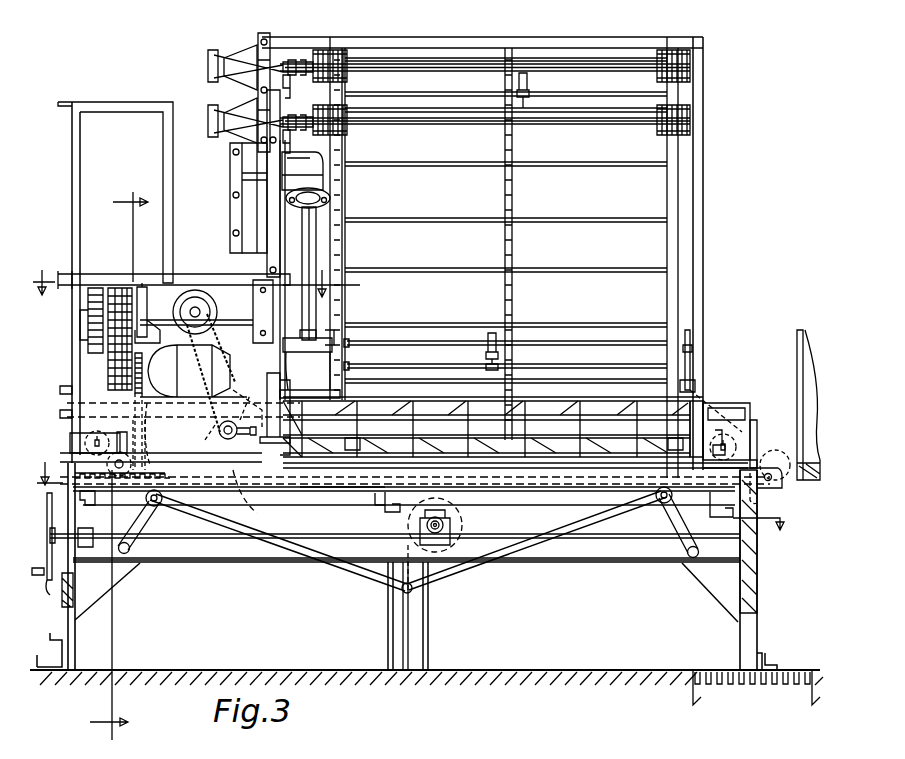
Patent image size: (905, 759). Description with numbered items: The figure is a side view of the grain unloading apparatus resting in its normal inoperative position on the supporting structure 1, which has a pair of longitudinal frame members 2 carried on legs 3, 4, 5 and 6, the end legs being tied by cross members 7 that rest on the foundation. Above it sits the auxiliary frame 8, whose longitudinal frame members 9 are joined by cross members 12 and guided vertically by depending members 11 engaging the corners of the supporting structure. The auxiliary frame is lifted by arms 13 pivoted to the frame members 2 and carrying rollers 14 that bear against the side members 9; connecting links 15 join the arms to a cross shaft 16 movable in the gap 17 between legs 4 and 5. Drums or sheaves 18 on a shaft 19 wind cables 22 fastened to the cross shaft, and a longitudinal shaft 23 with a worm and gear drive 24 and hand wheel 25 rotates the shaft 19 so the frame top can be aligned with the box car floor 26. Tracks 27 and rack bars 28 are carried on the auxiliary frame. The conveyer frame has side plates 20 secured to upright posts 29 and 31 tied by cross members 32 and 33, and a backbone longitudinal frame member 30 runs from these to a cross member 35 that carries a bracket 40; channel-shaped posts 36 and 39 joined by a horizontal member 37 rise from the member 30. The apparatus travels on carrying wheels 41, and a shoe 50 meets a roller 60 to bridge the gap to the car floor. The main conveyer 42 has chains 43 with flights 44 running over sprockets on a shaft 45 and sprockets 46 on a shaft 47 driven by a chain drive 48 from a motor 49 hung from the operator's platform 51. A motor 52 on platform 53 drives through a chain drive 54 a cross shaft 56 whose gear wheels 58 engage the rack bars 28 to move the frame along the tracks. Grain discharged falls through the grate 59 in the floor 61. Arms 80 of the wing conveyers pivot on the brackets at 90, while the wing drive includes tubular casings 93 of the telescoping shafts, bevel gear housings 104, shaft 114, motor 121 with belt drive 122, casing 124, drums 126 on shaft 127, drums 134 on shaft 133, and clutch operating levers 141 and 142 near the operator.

The supporting structure 1 is at (608, 566).
The longitudinal frame members 2 is at (232, 562).
The leg 3 is at (70, 634).
The leg 4 is at (388, 650).
The leg 5 is at (428, 635).
The leg 6 is at (738, 640).
The cross members 7 is at (50, 650).
The auxiliary frame 8 is at (558, 496).
The longitudinal frame members 9 is at (306, 494).
The depending members 11 is at (62, 598).
The cross members 12 is at (84, 505).
The arms 13 is at (148, 540).
The rollers 14 is at (158, 505).
The connecting links 15 is at (300, 552).
The cross shaft 16 is at (402, 592).
The gap 17 is at (408, 650).
The drums or sheaves 18 is at (462, 525).
The shaft 19 is at (443, 520).
The side plates 20 is at (72, 408).
The cable 22 is at (408, 550).
The longitudinally extending shaft 23 is at (205, 540).
The worm and gear drive connection 24 is at (455, 532).
The hand wheel 25 is at (41, 544).
The floor of the box car 26 is at (808, 335).
The tracks 27 is at (70, 465).
The rack bars 28 is at (258, 514).
The upright posts 29 is at (70, 355).
The longitudinal frame member 30 is at (150, 430).
The upright posts 31 is at (270, 383).
The cross member 32 is at (62, 398).
The cross member 33 is at (290, 390).
The cross member 35 is at (700, 385).
The channel-shaped post 36 is at (275, 358).
The horizontal member 37 is at (443, 37).
The channel-shaped post 39 is at (705, 150).
The bracket 40 is at (712, 412).
The carrying wheels or rollers 41 is at (70, 436).
The main conveyer 42 is at (382, 478).
The chains 43 is at (448, 419).
The flights 44 is at (563, 412).
The shaft 45 is at (722, 428).
The sprockets 46 is at (222, 438).
The shaft 47 is at (218, 430).
The chain drive 48 is at (210, 380).
The motor 49 is at (198, 298).
The shoe 50 is at (755, 420).
The platform 51 is at (188, 275).
The motor 52 is at (193, 371).
The platform 53 is at (145, 445).
The chain drive 54 is at (137, 392).
The cross shaft 56 is at (122, 436).
The gear wheels 58 is at (162, 467).
The grate 59 is at (710, 670).
The roller 60 is at (775, 458).
The floor 61 is at (552, 670).
The arms 80 is at (345, 428).
The pivotal connection 90 is at (345, 452).
The tubular casings 93 is at (316, 244).
The housing 104 is at (318, 172).
The shaft 114 is at (237, 320).
The motor 121 is at (167, 330).
The belt drive 122 is at (108, 365).
The casing 124 is at (258, 165).
The drums 126 is at (350, 52).
The shaft 127 is at (545, 62).
The shaft 133 is at (558, 118).
The drums 134 is at (347, 128).
The operating lever 141 is at (228, 50).
The operating lever 142 is at (226, 110).